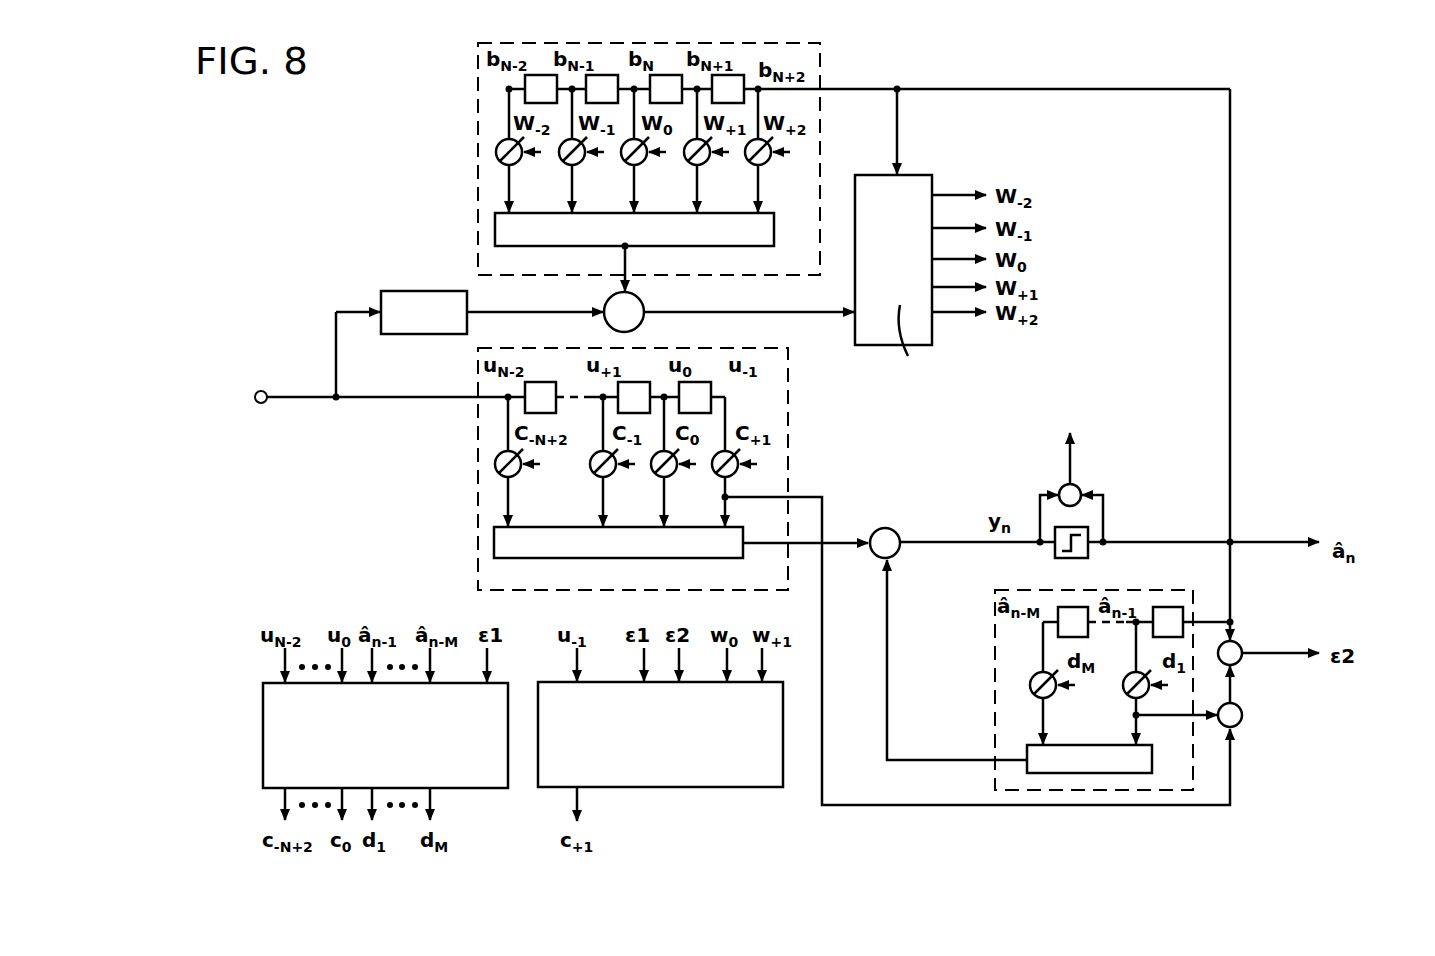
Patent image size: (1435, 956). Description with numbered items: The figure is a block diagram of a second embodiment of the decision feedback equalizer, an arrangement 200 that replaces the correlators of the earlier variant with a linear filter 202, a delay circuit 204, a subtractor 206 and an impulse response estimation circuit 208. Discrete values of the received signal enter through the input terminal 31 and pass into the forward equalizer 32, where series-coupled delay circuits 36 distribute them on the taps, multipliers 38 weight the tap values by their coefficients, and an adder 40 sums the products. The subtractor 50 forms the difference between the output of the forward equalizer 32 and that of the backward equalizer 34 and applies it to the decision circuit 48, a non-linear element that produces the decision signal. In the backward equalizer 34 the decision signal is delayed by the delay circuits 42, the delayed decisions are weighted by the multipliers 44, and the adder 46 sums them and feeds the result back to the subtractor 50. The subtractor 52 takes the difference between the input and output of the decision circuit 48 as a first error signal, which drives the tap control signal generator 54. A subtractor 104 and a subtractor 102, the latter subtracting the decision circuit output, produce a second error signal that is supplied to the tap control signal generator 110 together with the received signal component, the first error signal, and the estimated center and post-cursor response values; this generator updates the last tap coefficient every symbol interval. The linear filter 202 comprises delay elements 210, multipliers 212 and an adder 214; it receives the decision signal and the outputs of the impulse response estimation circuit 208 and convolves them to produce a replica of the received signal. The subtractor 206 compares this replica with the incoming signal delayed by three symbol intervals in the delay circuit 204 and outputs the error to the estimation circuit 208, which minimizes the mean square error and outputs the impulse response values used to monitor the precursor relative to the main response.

The arrangement 200 is at (311, 172).
The input terminal 31 is at (259, 404).
The forward equalizer 32 is at (788, 468).
The backward equalizer 34 is at (995, 675).
The delay circuits 36 is at (541, 382).
The multipliers 38 is at (518, 477).
The adder 40 is at (648, 558).
The delay circuits 42 is at (1073, 607).
The multipliers 44 is at (1125, 696).
The adder 46 is at (1170, 745).
The decision circuit 48 is at (1055, 553).
The subtractor 50 is at (894, 529).
The subtractor 52 is at (1079, 485).
The tap control signal generator 54 is at (263, 731).
The subtractor 102 is at (1242, 645).
The subtractor 104 is at (1243, 712).
The tap control signal generator 110 is at (720, 787).
The linear filter 202 is at (822, 70).
The delay circuit 204 is at (390, 291).
The subtractor 206 is at (642, 301).
The impulse response estimation circuit 208 is at (917, 175).
The delay elements 210 is at (541, 75).
The multipliers 212 is at (581, 163).
The adder 214 is at (706, 246).